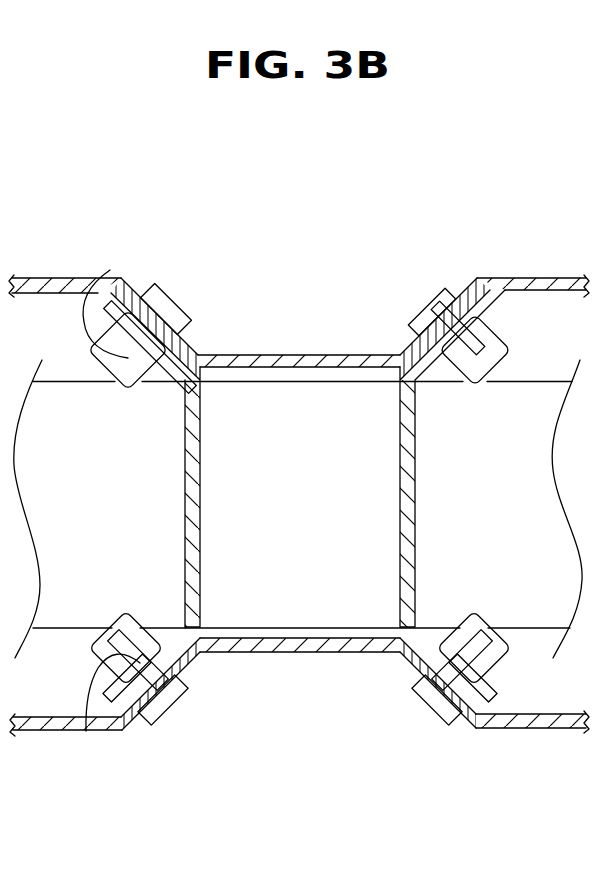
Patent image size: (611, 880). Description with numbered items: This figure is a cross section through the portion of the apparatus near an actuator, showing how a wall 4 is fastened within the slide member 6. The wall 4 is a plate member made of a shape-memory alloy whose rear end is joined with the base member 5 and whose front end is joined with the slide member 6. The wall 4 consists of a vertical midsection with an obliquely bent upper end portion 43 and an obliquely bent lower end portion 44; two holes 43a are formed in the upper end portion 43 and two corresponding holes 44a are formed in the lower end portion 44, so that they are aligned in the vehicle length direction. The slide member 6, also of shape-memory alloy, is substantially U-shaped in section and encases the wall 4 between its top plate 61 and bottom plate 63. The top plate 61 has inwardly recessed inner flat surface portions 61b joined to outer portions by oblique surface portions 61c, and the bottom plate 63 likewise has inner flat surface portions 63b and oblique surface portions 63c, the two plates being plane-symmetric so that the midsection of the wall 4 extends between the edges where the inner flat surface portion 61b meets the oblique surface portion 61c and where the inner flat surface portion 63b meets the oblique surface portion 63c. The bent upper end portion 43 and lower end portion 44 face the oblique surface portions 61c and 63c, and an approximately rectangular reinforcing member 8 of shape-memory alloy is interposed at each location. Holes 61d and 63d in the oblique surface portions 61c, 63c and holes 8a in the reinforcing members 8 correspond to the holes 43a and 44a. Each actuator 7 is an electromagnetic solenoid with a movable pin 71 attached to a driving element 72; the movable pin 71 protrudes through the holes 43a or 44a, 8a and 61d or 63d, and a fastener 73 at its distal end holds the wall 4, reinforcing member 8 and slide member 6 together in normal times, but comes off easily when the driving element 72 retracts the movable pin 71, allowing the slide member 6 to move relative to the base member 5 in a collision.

The wall 4 is at (414, 490).
The base member 5 is at (518, 379).
The slide member 6 is at (322, 486).
The top plate 61 is at (322, 379).
The inner flat surface portion 61b is at (314, 356).
The oblique surface portion 61c is at (438, 308).
The hole 61d is at (183, 312).
The bottom plate 63 is at (322, 740).
The inner flat surface portion 63b is at (322, 650).
The oblique surface portion 63c is at (465, 720).
The hole 63d is at (178, 704).
The actuator 7 is at (445, 451).
The movable pin 71 is at (441, 316).
The driving element 72 is at (489, 334).
The fastener 73 is at (410, 305).
The reinforcing member 8 is at (407, 342).
The hole 8a is at (190, 325).
The upper end portion 43 is at (113, 282).
The hole 43a is at (101, 284).
The lower end portion 44 is at (147, 722).
The hole 44a is at (85, 731).